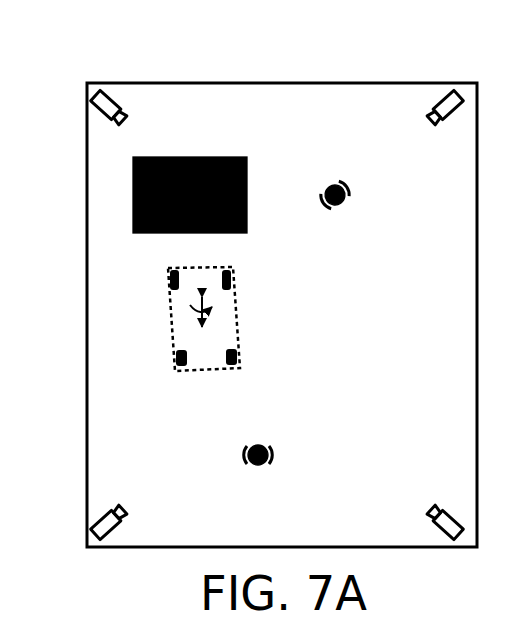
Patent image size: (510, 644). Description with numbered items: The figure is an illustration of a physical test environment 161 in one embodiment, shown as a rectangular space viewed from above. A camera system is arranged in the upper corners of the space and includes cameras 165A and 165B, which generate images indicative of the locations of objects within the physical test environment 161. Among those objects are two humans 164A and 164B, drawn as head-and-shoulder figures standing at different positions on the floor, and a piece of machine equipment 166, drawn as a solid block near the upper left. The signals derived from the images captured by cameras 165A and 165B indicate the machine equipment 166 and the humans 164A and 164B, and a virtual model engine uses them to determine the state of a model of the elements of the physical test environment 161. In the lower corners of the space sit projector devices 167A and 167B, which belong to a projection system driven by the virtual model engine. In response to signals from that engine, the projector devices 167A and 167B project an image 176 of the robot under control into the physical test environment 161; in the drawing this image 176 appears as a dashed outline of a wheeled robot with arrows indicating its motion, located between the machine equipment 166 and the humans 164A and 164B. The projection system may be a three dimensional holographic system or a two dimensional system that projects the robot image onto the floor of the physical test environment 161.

The physical test environment 161 is at (103, 65).
The camera 165A is at (121, 105).
The camera 165B is at (435, 103).
The projector device 167A is at (120, 522).
The projector device 167B is at (436, 527).
The machine equipment 166 is at (188, 157).
The human 164A is at (348, 202).
The human 164B is at (272, 452).
The image of robot under control 176 is at (240, 327).